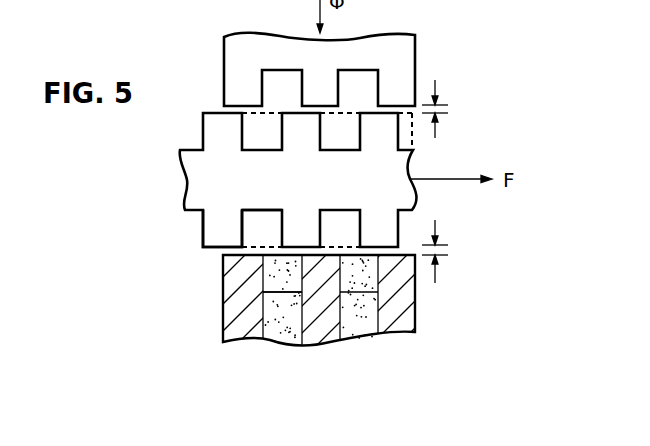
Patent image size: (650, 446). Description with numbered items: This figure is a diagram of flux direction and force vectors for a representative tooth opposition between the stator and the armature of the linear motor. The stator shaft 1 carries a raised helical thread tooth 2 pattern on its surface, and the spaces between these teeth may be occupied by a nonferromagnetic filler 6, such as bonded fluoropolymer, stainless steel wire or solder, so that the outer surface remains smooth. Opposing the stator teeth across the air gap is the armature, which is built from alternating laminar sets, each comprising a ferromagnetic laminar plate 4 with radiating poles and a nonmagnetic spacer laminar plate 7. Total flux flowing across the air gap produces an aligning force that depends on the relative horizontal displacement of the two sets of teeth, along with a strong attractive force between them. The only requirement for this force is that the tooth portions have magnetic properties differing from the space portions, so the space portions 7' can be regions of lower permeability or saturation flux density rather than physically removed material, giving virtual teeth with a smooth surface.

The stator shaft 1 is at (192, 181).
The helical thread tooth 2 is at (203, 225).
The filler 6 is at (250, 232).
The laminar plate 4 is at (230, 263).
The spacer laminar plate 7 is at (319, 326).
The space portion 7' is at (285, 299).